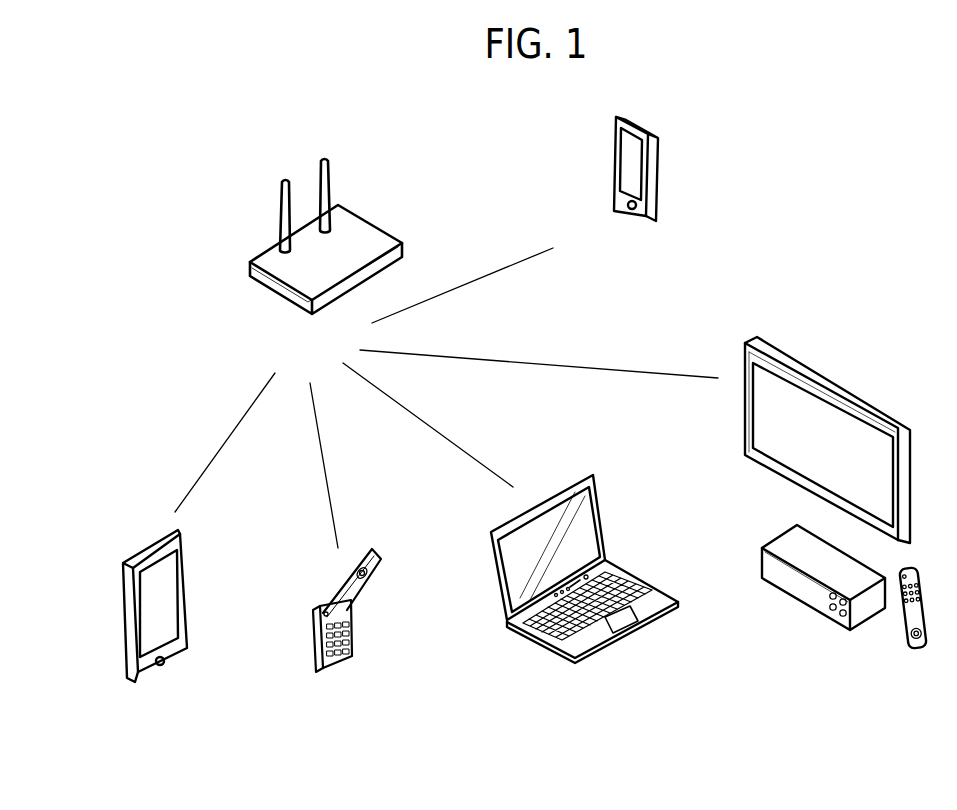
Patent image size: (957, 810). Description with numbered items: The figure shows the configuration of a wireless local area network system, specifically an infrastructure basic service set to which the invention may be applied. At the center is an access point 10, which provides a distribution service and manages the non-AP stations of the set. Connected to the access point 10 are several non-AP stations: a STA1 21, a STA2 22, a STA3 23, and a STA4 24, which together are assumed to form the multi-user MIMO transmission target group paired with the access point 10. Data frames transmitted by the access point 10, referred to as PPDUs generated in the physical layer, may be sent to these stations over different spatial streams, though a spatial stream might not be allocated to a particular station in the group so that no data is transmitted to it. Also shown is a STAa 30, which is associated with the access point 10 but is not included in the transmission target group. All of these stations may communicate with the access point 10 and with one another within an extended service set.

The access point 10 is at (326, 268).
The STA1 21 is at (151, 638).
The STA2 22 is at (342, 647).
The STA3 23 is at (584, 600).
The STA4 24 is at (836, 515).
The STAa 30 is at (631, 201).